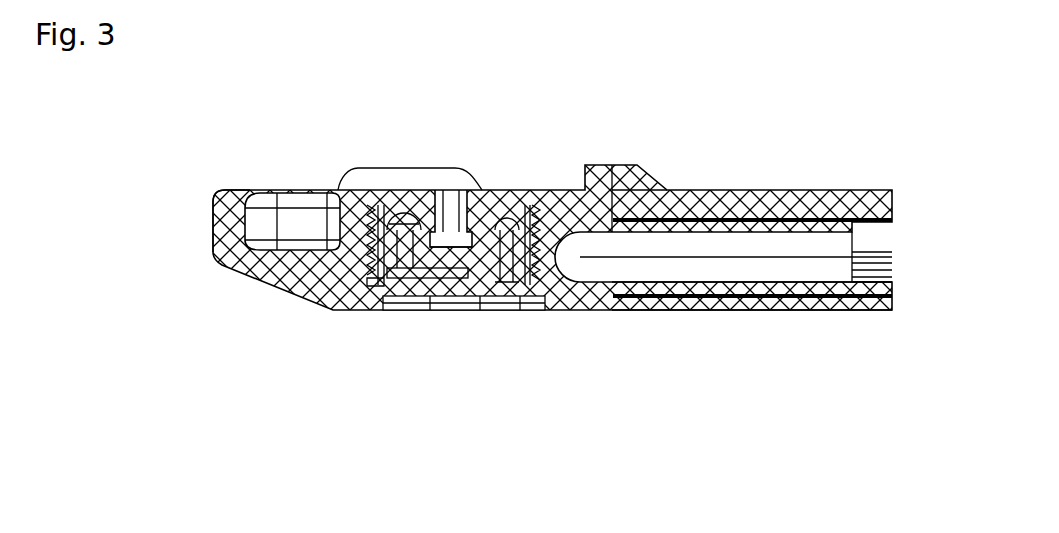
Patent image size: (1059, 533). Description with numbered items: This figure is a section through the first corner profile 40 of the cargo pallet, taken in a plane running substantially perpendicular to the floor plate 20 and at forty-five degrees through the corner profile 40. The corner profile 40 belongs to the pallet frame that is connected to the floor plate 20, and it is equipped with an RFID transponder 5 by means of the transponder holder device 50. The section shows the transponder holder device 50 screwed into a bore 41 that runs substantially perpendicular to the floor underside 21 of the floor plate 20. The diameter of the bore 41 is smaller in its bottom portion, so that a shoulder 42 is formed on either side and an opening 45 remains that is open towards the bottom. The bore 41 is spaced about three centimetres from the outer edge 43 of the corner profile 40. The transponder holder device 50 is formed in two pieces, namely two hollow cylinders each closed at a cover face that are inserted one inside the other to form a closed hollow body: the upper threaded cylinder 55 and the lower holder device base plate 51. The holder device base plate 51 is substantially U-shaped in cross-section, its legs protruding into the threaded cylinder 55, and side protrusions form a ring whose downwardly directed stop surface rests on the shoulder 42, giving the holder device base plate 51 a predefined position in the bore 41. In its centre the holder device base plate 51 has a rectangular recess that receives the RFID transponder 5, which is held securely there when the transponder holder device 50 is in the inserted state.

The RFID transponder 5 is at (340, 308).
The floor plate 20 is at (875, 253).
The floor underside 21 is at (767, 326).
The corner profile 40 is at (288, 258).
The bore 41 is at (463, 324).
The shoulder 42 is at (563, 292).
The outer edge 43 is at (210, 229).
The opening 45 is at (452, 306).
The transponder holder device 50 is at (396, 171).
The holder device base plate 51 is at (508, 286).
The threaded cylinder 55 is at (521, 195).